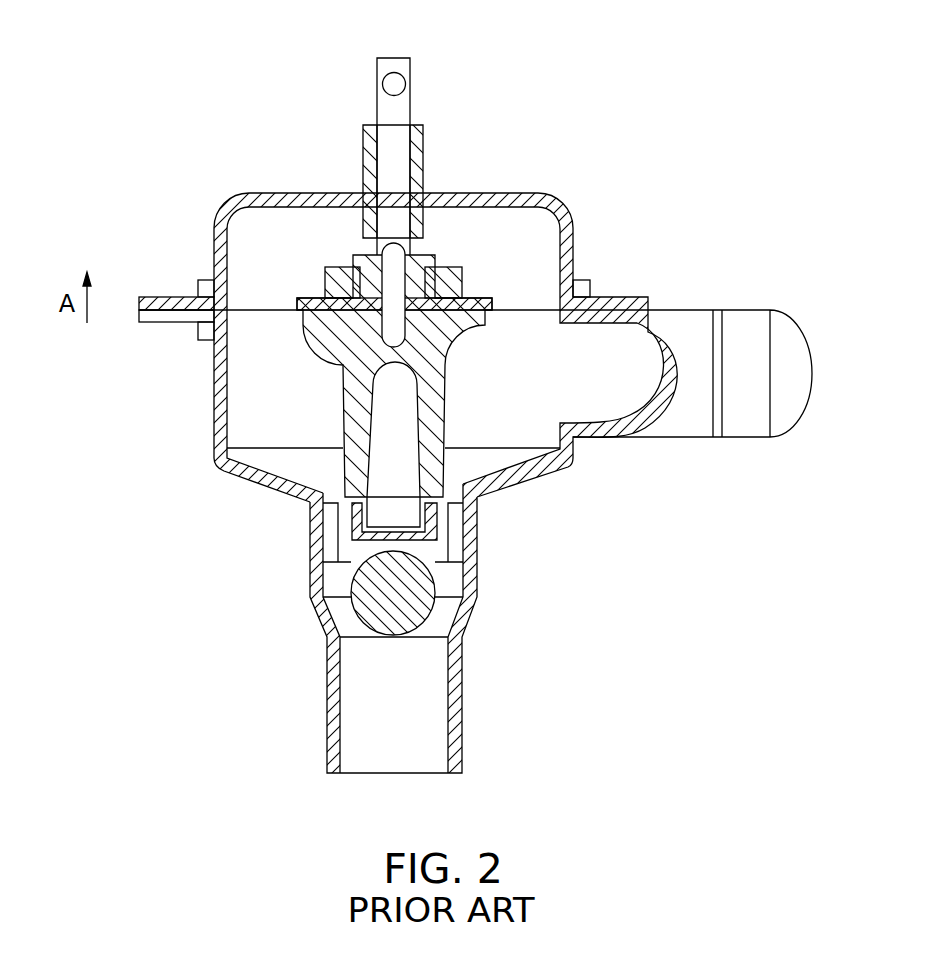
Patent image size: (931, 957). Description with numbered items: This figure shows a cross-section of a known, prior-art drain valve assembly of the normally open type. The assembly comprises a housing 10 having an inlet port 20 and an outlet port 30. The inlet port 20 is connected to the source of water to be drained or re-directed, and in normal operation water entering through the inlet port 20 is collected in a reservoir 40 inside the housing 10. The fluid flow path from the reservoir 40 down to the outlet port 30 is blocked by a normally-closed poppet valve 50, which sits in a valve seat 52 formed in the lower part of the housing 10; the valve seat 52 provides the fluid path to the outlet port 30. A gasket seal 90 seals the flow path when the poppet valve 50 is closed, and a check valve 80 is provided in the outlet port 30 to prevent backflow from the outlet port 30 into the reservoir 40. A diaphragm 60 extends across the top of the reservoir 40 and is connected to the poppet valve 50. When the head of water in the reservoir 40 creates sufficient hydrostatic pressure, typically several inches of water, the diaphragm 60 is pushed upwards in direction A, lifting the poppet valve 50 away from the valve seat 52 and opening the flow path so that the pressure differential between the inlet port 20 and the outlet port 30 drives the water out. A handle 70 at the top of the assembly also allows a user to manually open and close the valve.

The housing 10 is at (580, 462).
The inlet port 20 is at (702, 322).
The outlet port 30 is at (453, 728).
The reservoir 40 is at (262, 432).
The poppet valve 50 is at (400, 428).
The valve seat 52 is at (307, 497).
The diaphragm 60 is at (258, 310).
The handle 70 is at (392, 65).
The check valve 80 is at (347, 617).
The gasket seal 90 is at (362, 500).